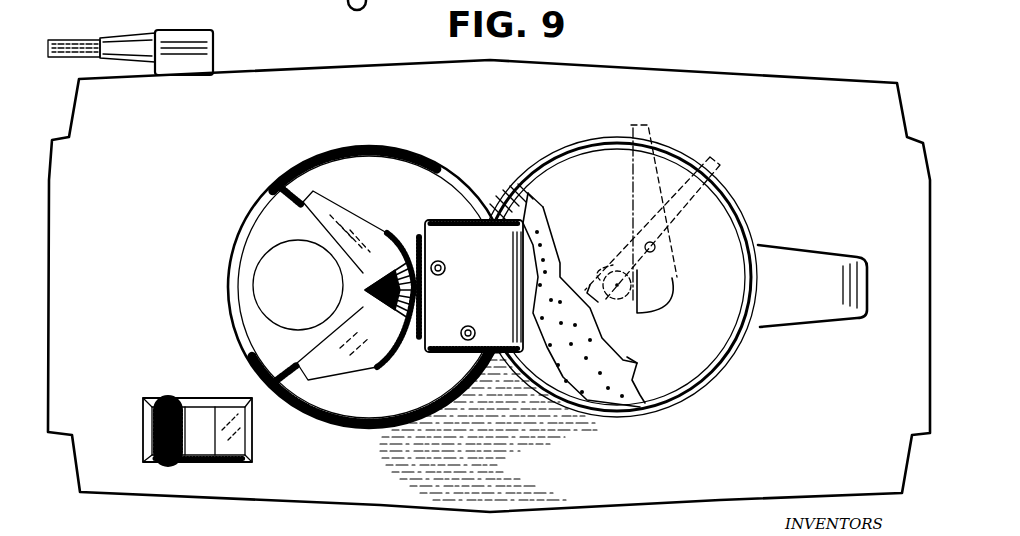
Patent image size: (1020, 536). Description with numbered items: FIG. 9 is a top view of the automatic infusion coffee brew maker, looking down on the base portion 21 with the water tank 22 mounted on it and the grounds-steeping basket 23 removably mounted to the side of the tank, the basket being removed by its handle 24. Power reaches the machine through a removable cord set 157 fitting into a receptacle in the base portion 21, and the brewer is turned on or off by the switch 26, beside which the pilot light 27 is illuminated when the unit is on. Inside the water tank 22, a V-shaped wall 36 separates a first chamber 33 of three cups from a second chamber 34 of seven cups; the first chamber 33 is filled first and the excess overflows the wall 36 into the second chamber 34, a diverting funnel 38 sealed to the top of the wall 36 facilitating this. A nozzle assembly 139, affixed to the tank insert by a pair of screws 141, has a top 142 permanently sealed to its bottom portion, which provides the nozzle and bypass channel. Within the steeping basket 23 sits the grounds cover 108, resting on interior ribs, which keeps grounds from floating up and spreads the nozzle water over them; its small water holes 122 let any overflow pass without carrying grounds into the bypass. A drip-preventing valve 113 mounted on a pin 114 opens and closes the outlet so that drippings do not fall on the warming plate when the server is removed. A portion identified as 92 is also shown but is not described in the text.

The base portion 21 is at (170, 499).
The water tank 22 is at (275, 185).
The grounds-steeping basket 23 is at (567, 151).
The handle 24 is at (805, 262).
The switch 26 is at (152, 431).
The pilot light 27 is at (232, 442).
The first chamber 33 is at (309, 289).
The second chamber 34 is at (390, 390).
The V-shaped wall 36 is at (293, 370).
The diverting funnel 38 is at (318, 222).
The cover plate 92 is at (136, 196).
The grounds cover 108 is at (545, 246).
The drip-preventing valve 113 is at (658, 318).
The pin 114 is at (656, 248).
The water holes 122 is at (640, 362).
The nozzle assembly 139 is at (447, 235).
The screws 141 is at (486, 308).
The top of nozzle assembly 142 is at (493, 256).
The removable cord set 157 is at (212, 40).